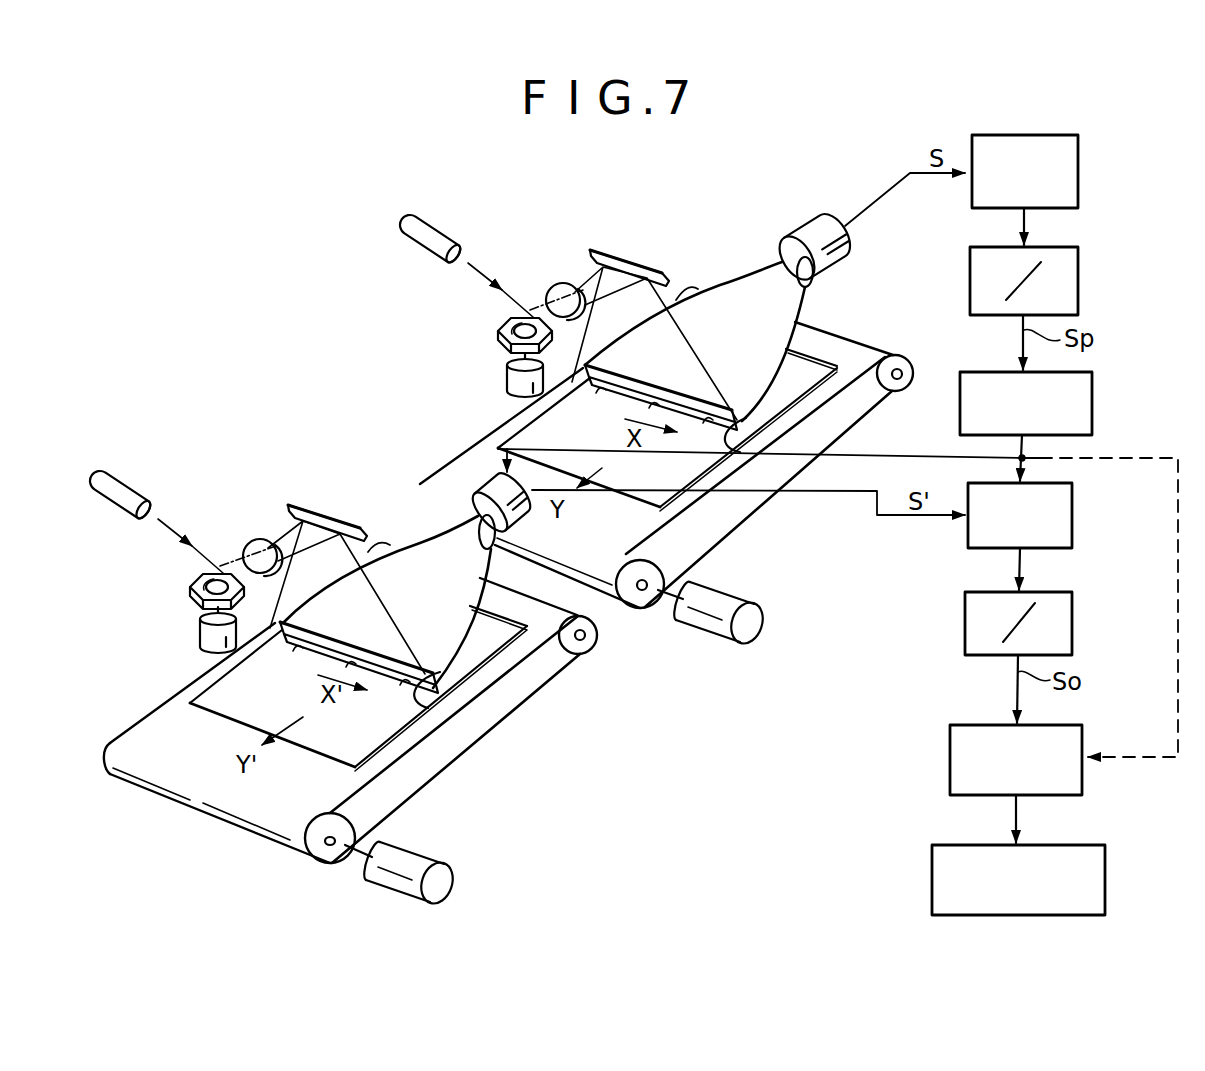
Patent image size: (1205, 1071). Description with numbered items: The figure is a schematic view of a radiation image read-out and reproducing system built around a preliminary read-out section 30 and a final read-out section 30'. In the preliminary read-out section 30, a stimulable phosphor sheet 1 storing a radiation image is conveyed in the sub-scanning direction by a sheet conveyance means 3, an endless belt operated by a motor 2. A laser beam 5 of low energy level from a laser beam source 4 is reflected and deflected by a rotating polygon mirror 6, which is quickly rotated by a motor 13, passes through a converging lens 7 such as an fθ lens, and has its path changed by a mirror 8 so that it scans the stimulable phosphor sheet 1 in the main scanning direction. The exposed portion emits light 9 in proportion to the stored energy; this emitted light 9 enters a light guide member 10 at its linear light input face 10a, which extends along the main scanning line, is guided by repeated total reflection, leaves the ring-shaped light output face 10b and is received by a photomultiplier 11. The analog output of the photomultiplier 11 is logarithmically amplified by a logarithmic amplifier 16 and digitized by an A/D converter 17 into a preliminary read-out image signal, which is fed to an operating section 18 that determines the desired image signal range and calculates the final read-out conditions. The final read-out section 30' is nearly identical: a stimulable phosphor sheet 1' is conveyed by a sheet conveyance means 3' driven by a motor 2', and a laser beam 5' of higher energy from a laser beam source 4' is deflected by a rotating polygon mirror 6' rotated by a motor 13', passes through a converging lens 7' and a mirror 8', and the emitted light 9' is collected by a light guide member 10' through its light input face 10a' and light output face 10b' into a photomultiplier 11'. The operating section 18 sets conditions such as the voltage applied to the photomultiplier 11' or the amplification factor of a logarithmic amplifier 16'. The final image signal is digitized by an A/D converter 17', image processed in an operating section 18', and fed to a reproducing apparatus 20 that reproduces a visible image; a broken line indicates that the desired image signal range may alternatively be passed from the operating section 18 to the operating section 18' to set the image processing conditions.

The stimulable phosphor sheet 1 is at (667, 444).
The motor 2 is at (728, 604).
The sheet conveyance means 3 is at (666, 465).
The laser beam source 4 is at (437, 231).
The laser beam 5 is at (602, 330).
The rotating polygon mirror 6 is at (500, 330).
The converging lens 7 is at (564, 273).
The mirror 8 is at (629, 254).
The emitted light 9 is at (655, 398).
The light guide member 10 is at (695, 326).
The light input face 10a is at (798, 453).
The light output face 10b is at (851, 281).
The photomultiplier 11 is at (814, 232).
The motor 13 is at (497, 375).
The logarithmic amplifier 16 is at (1025, 145).
The A/D converter 17 is at (1055, 281).
The operating section 18 is at (1049, 396).
The reproducing apparatus 20 is at (1105, 866).
The preliminary read-out section 30 is at (650, 305).
The stimulable phosphor sheet 1' is at (358, 697).
The motor 2' is at (416, 864).
The sheet conveyance means 3' is at (350, 720).
The laser beam source 4' is at (137, 486).
The laser beam 5' is at (291, 583).
The rotating polygon mirror 6' is at (186, 577).
The converging lens 7' is at (262, 523).
The mirror 8' is at (327, 510).
The emitted light 9' is at (345, 661).
The light guide member 10' is at (387, 573).
The light input face 10a' is at (491, 713).
The light output face 10b' is at (551, 532).
The photomultiplier 11' is at (487, 481).
The motor 13' is at (183, 630).
The logarithmic amplifier 16' is at (1049, 515).
The A/D converter 17' is at (1051, 623).
The operating section 18' is at (1045, 746).
The final read-out section 30' is at (340, 565).